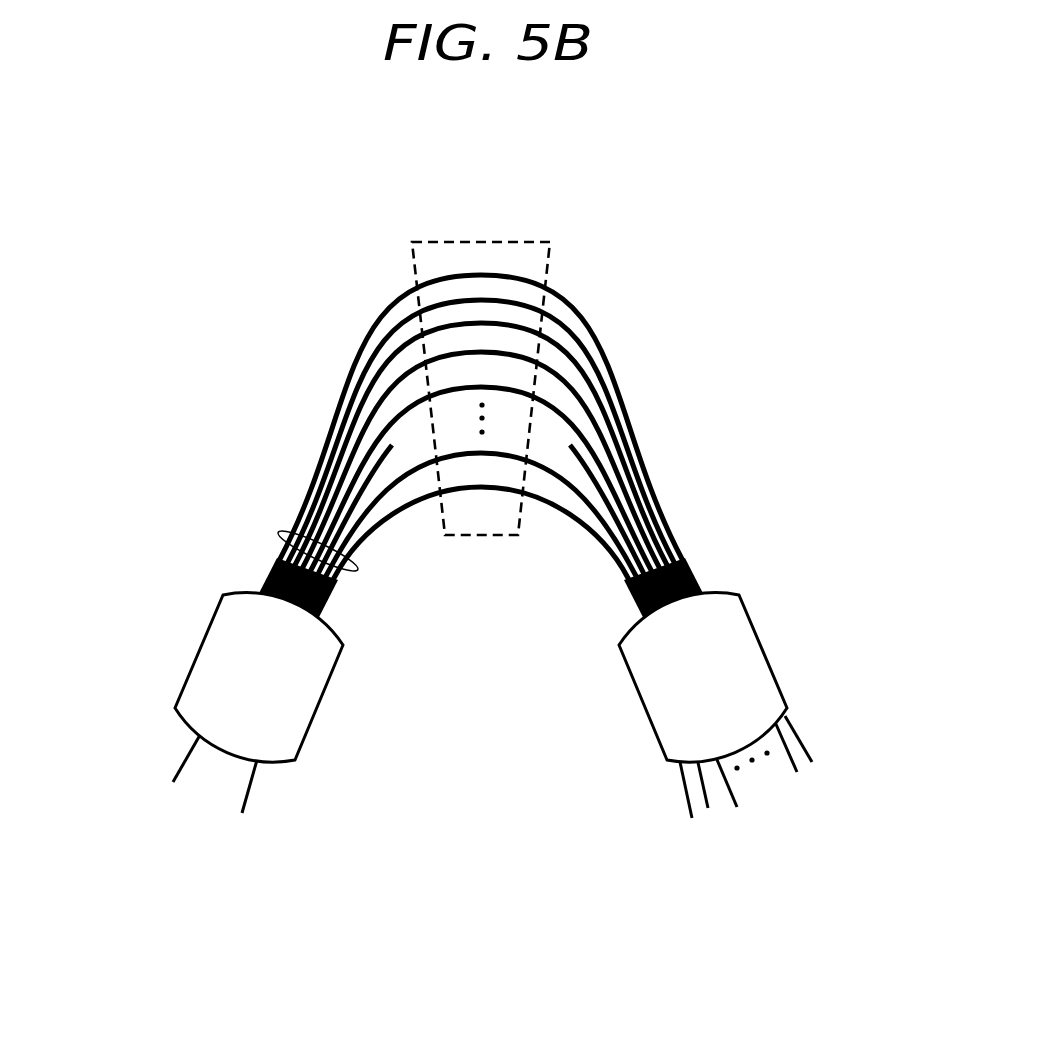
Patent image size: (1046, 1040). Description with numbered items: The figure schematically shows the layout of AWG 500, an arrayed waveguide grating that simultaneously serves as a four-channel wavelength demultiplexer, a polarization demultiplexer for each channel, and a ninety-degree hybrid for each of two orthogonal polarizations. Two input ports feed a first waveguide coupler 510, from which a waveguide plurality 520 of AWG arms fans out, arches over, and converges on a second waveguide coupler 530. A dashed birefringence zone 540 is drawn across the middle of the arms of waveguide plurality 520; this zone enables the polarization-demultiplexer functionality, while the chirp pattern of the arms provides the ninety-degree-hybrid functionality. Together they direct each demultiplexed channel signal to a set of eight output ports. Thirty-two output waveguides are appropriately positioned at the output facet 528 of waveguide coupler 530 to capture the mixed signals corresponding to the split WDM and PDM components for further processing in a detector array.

The AWG 500 is at (508, 118).
The waveguide coupler 510 is at (198, 650).
The waveguide plurality 520 is at (296, 540).
The waveguide coupler 530 is at (768, 643).
The birefringence zone 540 is at (488, 243).
The output facet 528 is at (736, 735).